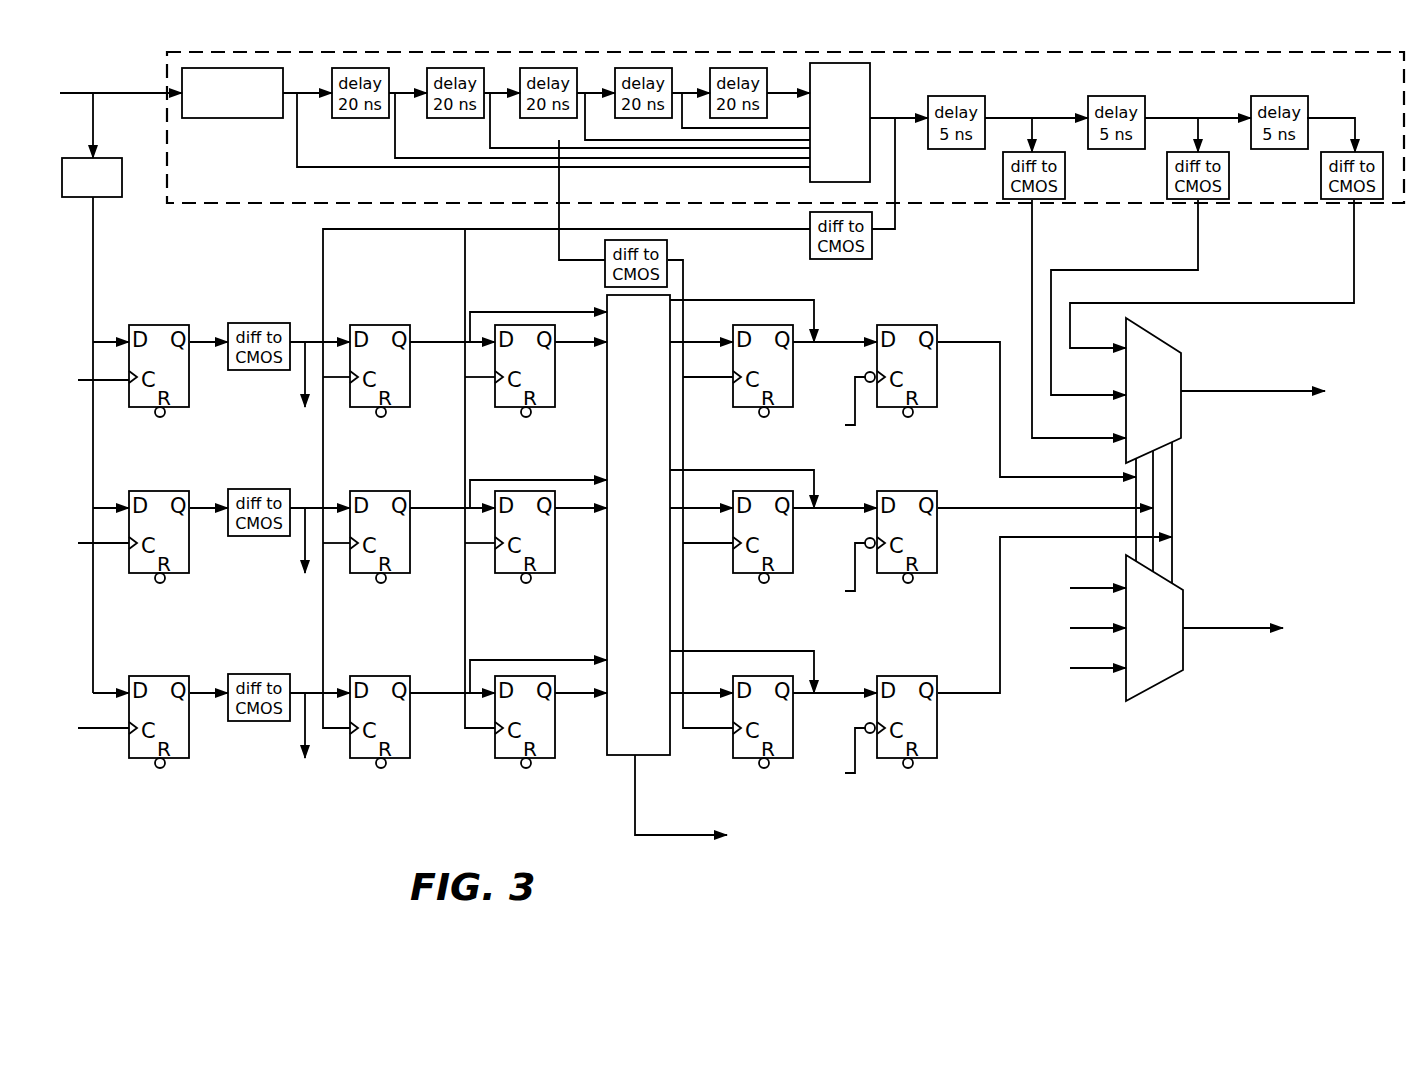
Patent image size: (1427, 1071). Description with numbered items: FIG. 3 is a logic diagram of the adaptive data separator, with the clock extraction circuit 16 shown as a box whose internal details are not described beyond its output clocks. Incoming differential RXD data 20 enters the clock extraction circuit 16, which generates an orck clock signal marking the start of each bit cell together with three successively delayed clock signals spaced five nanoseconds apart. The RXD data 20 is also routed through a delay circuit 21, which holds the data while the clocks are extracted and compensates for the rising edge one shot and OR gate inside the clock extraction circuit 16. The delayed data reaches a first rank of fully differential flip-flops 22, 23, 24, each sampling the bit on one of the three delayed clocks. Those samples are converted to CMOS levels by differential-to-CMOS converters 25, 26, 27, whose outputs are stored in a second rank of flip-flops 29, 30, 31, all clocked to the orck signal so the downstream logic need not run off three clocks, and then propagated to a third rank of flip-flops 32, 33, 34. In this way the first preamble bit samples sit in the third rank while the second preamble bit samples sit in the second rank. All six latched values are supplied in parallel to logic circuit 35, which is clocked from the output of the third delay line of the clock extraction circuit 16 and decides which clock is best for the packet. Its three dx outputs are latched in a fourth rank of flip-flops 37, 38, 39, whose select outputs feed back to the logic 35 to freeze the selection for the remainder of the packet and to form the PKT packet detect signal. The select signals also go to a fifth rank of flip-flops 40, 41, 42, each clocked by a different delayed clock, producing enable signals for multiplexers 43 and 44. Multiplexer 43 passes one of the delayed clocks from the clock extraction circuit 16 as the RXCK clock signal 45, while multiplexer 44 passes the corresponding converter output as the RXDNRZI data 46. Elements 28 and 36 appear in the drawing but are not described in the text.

The clock extraction circuit 16 is at (1090, 48).
The RXD data 20 is at (38, 75).
The delay circuit 21 is at (60, 181).
The flip-flop 22 is at (183, 407).
The flip-flop 23 is at (183, 573).
The flip-flop 24 is at (183, 758).
The differential-to-CMOS converter 25 is at (258, 370).
The differential-to-CMOS converter 26 is at (258, 536).
The differential-to-CMOS converter 27 is at (258, 721).
The differential to CMOS converter 28 is at (872, 243).
The flip-flop 29 is at (405, 407).
The flip-flop 30 is at (405, 573).
The flip-flop 31 is at (405, 758).
The flip-flop 32 is at (553, 399).
The flip-flop 33 is at (553, 565).
The flip-flop 34 is at (553, 750).
The logic circuit 35 is at (652, 755).
The differential to CMOS converter 36 is at (668, 248).
The flip-flop 37 is at (738, 407).
The flip-flop 38 is at (738, 573).
The flip-flop 39 is at (738, 758).
The flip-flop 40 is at (935, 397).
The flip-flop 41 is at (935, 565).
The flip-flop 42 is at (935, 750).
The multiplexer 43 is at (1178, 440).
The multiplexer 44 is at (1172, 680).
The RXCK clock signal 45 is at (1365, 408).
The RXDNRZI data 46 is at (1318, 643).